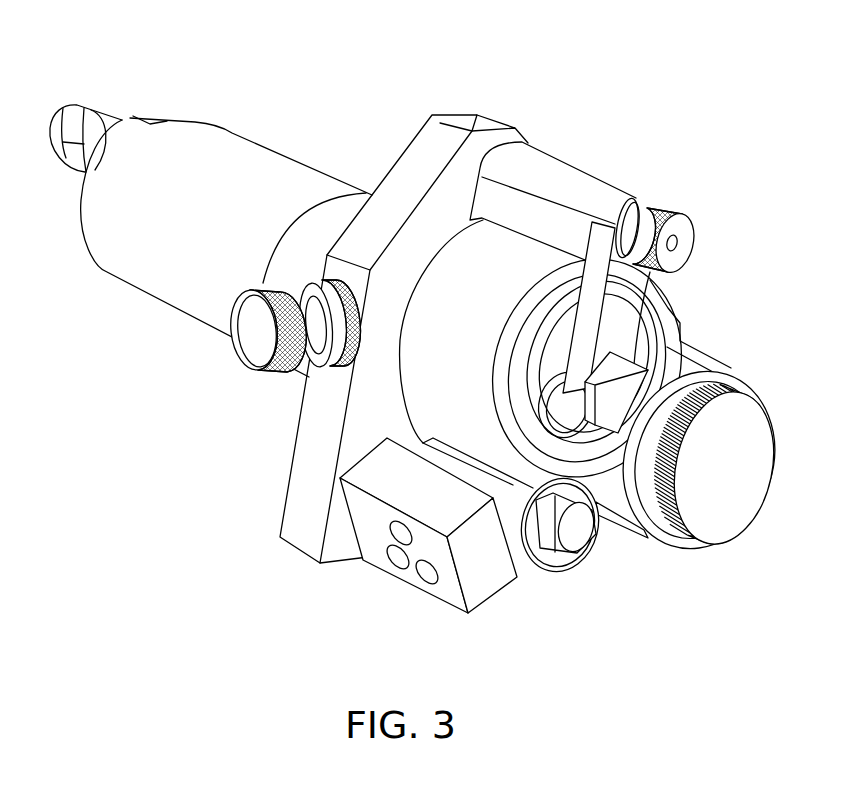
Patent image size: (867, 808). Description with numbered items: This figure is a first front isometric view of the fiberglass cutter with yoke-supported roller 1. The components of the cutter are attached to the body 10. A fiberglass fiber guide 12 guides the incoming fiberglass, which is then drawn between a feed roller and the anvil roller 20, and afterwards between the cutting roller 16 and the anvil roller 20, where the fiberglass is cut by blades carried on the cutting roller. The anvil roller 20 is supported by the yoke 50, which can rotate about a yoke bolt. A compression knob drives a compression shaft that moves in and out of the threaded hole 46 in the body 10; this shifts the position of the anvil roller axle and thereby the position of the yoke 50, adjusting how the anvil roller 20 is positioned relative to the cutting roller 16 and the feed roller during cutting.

The fiberglass cutter with yoke-supported roller 1 is at (423, 326).
The body 10 is at (403, 167).
The fiberglass fiber guide 12 is at (478, 587).
The cutting roller 16 is at (718, 372).
The anvil roller 20 is at (476, 355).
The threaded hole 46 is at (282, 298).
The yoke 50 is at (617, 200).